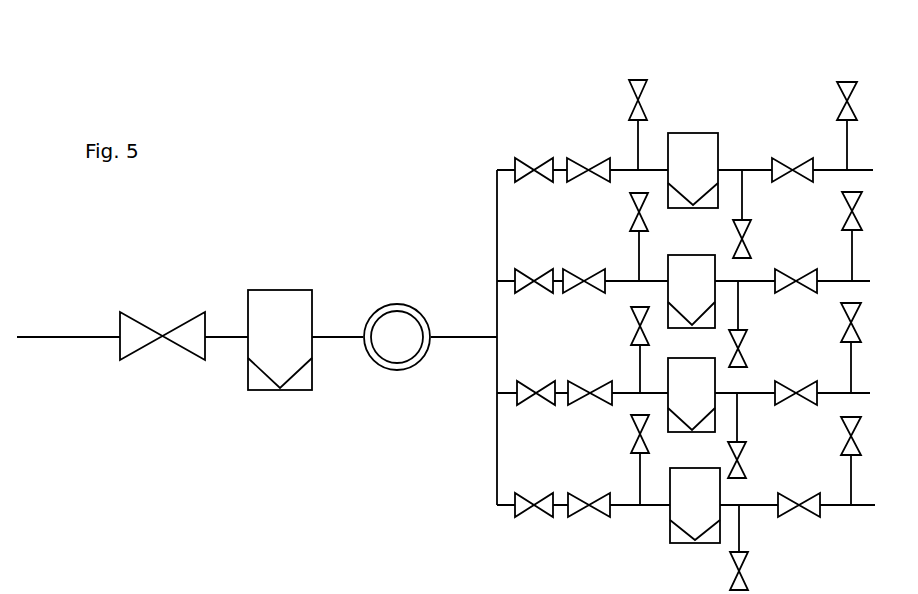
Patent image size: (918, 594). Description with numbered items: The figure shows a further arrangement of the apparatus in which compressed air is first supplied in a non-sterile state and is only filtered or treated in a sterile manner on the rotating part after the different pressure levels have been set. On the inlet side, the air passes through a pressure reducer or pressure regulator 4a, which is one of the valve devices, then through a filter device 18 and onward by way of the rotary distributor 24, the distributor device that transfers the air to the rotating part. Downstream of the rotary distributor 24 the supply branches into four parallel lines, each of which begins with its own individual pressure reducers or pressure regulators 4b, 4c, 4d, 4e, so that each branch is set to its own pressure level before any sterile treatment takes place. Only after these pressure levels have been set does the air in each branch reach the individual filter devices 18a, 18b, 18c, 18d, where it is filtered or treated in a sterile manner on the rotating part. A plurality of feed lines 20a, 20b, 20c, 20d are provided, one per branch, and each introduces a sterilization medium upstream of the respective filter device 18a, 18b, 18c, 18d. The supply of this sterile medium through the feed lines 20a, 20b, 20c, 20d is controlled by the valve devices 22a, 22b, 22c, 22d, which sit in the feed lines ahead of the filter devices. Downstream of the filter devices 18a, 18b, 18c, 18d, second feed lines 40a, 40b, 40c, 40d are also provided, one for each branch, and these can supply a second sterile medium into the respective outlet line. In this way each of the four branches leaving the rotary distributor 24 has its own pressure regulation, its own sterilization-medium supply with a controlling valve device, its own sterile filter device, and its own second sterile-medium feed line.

The pressure reducer 4a is at (197, 332).
The pressure reducer 4b is at (500, 170).
The pressure reducer 4c is at (497, 282).
The pressure reducer 4d is at (497, 393).
The pressure reducer 4e is at (520, 516).
The filter device 18 is at (287, 313).
The filter device 18a is at (693, 170).
The filter device 18b is at (691, 291).
The filter device 18c is at (691, 395).
The filter device 18d is at (695, 505).
The feed line 20a is at (638, 147).
The feed line 20b is at (638, 262).
The feed line 20c is at (640, 374).
The feed line 20d is at (638, 481).
The valve device 22a is at (650, 88).
The valve device 22b is at (635, 206).
The valve device 22c is at (636, 320).
The valve device 22d is at (636, 428).
The rotary distributor 24 is at (411, 309).
The second feed line 40a is at (843, 147).
The second feed line 40b is at (852, 257).
The second feed line 40c is at (851, 367).
The second feed line 40d is at (851, 482).